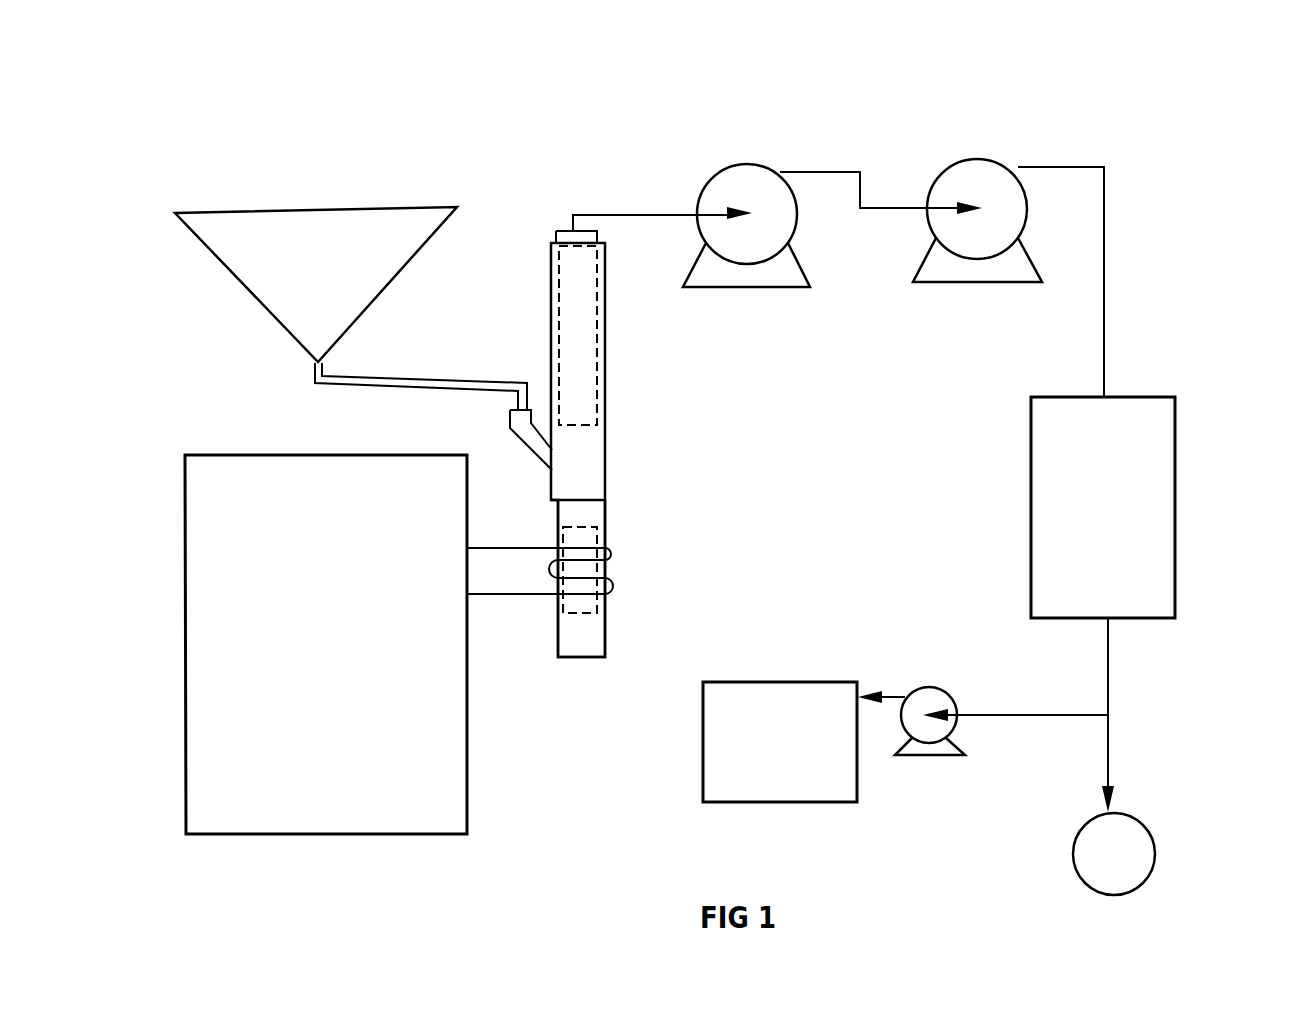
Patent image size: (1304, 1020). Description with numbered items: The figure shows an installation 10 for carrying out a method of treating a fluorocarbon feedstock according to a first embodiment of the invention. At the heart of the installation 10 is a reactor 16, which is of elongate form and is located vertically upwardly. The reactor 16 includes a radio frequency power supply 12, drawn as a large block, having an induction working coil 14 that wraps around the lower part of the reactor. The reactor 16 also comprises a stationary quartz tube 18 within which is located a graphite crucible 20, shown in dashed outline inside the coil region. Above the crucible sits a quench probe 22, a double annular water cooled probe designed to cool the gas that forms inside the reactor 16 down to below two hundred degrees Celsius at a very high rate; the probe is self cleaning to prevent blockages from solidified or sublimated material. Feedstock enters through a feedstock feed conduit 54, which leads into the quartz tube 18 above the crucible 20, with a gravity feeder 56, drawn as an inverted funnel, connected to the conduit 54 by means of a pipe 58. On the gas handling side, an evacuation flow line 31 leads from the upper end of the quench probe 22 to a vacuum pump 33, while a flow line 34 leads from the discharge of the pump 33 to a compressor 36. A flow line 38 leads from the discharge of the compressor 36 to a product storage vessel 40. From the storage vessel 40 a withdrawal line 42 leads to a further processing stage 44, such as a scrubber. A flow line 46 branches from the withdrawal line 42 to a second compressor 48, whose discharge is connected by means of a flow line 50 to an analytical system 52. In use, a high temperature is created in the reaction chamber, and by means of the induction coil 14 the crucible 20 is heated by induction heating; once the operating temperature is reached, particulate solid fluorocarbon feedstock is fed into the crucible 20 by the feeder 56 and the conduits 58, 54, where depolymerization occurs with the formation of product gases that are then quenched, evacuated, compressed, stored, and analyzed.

The installation 10 is at (1160, 96).
The radio frequency power supply 12 is at (311, 658).
The induction working coil 14 is at (612, 548).
The reactor 16 is at (650, 448).
The quartz tube 18 is at (607, 622).
The crucible 20 is at (607, 530).
The quench probe 22 is at (580, 335).
The evacuation flow line 31 is at (643, 213).
The vacuum pump 33 is at (752, 190).
The flow line 34 is at (826, 170).
The compressor 36 is at (973, 180).
The flow line 38 is at (1105, 287).
The product storage vessel 40 is at (1089, 518).
The withdrawal line 42 is at (1108, 663).
The further processing stage 44 is at (1097, 871).
The flow line 46 is at (1018, 717).
The compressor 48 is at (927, 698).
The flow line 50 is at (887, 690).
The analytical system 52 is at (762, 756).
The feedstock feed conduit 54 is at (523, 442).
The gravity feeder 56 is at (252, 297).
The pipe 58 is at (433, 380).